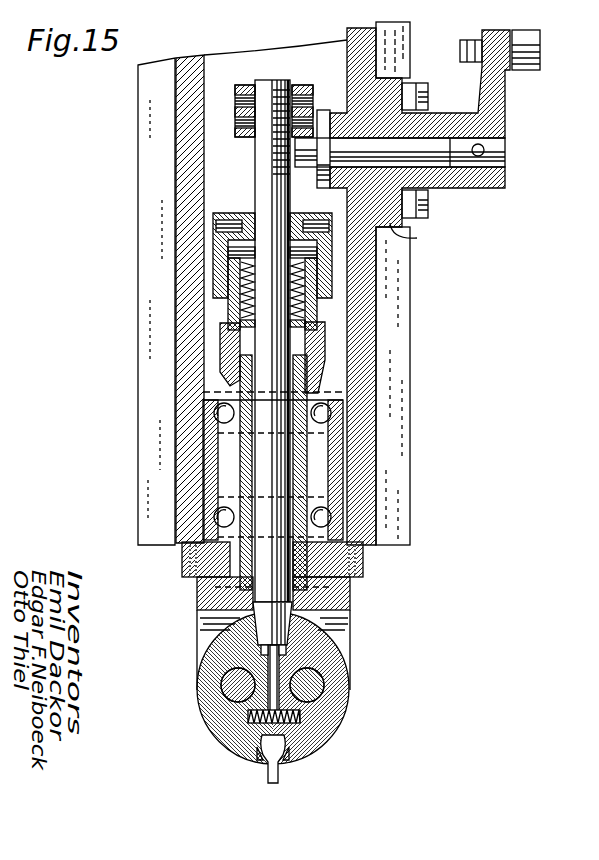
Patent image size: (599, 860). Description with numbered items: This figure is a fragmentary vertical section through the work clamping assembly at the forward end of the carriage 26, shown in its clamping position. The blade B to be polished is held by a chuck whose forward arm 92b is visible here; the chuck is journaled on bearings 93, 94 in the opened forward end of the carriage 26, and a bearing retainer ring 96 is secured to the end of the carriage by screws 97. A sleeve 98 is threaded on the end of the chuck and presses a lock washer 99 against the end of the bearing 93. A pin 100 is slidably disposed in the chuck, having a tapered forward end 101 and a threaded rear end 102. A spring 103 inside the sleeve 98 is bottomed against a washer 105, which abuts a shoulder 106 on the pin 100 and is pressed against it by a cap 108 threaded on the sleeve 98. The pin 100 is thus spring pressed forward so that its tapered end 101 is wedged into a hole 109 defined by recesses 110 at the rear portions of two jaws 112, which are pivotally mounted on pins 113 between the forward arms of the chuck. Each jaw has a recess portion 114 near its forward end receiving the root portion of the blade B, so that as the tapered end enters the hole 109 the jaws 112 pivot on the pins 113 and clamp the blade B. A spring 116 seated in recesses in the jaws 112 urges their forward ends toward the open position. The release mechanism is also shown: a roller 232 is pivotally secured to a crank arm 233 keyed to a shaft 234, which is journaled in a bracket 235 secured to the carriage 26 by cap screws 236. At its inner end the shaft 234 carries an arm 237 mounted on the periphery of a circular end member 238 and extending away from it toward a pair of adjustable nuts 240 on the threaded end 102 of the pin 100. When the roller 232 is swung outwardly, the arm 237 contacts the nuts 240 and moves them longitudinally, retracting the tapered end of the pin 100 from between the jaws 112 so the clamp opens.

The carriage 26 is at (400, 400).
The arm of chuck 92b is at (340, 633).
The bearing 93 is at (234, 414).
The bearing 94 is at (234, 518).
The bearing retainer ring 96 is at (360, 562).
The screws 97 is at (355, 577).
The sleeve 98 is at (327, 338).
The lock washer 99 is at (232, 393).
The pin 100 is at (281, 465).
The tapered forward end 101 is at (260, 631).
The threaded rear end 102 is at (263, 145).
The spring 103 is at (255, 243).
The washer 105 is at (306, 320).
The shoulder 106 is at (252, 327).
The cap 108 is at (253, 214).
The hole 109 is at (285, 650).
The recesses 110 is at (257, 652).
The jaws 112 is at (228, 743).
The pins 113 is at (230, 690).
The recess portion 114 is at (260, 762).
The spring 116 is at (303, 717).
The roller 232 is at (528, 30).
The crank arm 233 is at (502, 112).
The shaft 234 is at (497, 146).
The bracket 235 is at (419, 236).
The cap screws 236 is at (430, 204).
The arm 237 is at (310, 144).
The circular end member 238 is at (321, 112).
The adjustable nuts 240 is at (251, 86).
The blade B is at (290, 748).